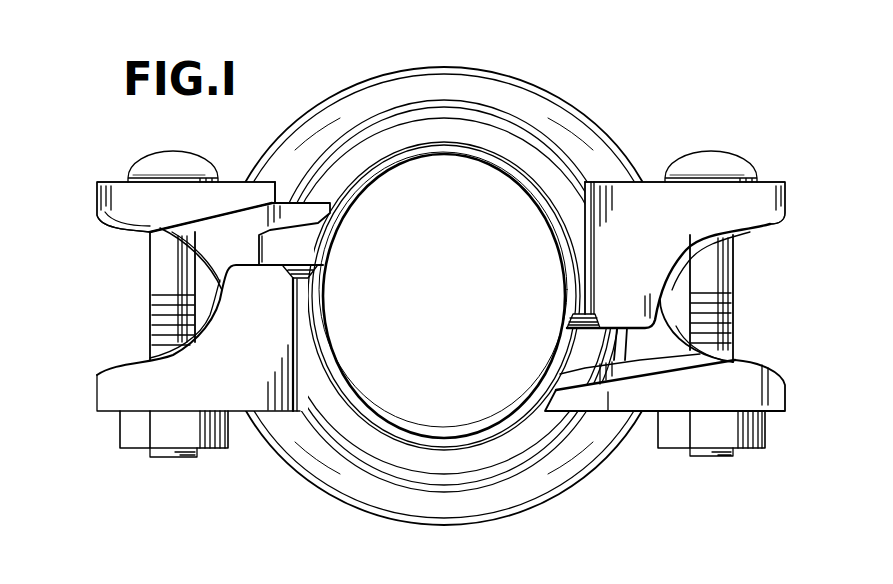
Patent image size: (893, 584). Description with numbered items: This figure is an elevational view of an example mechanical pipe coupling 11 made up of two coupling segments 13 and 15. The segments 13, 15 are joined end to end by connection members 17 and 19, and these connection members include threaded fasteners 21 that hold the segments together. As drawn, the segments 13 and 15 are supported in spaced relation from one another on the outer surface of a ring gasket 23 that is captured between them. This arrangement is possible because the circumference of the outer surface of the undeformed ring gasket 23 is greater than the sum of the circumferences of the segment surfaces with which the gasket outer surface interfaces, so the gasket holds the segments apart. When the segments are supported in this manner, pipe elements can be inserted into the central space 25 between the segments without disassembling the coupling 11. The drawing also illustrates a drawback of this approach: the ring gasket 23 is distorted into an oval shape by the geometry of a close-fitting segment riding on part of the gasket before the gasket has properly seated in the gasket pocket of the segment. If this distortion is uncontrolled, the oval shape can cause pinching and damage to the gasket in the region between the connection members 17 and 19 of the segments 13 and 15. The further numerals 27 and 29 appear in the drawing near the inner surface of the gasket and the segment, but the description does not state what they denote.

The coupling 11 is at (578, 82).
The coupling segment 13 is at (457, 80).
The coupling segment 15 is at (436, 512).
The connection member 17 is at (98, 203).
The connection member 19 is at (780, 197).
The threaded fastener 21 is at (158, 290).
The ring gasket 23 is at (452, 152).
The central space 25 is at (460, 314).
The inner surface 27 is at (442, 428).
The arcuate surface 29 is at (325, 360).